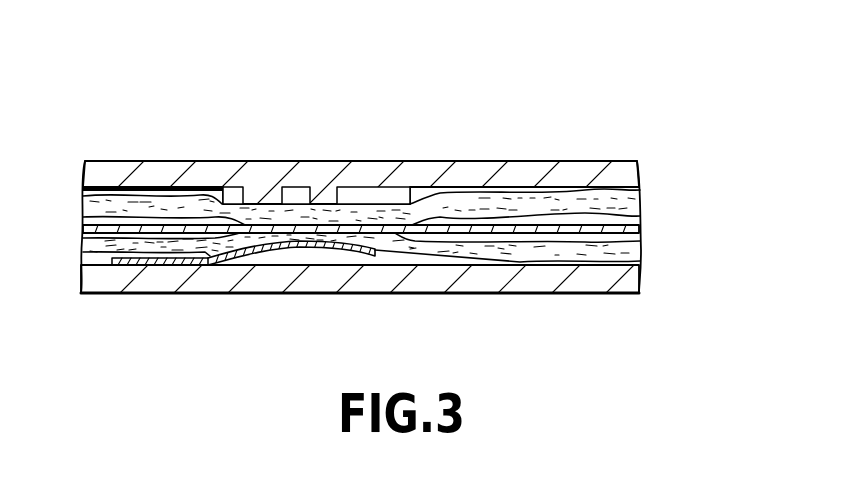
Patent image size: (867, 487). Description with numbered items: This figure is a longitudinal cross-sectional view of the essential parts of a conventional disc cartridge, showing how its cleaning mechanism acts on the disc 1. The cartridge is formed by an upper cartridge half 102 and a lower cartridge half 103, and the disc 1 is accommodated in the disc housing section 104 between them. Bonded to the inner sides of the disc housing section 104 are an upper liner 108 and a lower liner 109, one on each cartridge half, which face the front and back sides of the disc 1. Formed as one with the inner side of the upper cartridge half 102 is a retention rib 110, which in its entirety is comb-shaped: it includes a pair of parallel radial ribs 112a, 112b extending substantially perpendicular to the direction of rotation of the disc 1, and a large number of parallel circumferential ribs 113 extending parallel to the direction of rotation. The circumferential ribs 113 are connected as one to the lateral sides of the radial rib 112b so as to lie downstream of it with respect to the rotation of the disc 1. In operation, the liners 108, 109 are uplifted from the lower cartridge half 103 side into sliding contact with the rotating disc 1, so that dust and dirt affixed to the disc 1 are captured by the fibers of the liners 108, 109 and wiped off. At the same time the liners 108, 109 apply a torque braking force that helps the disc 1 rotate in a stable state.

The disc 1 is at (636, 227).
The upper cartridge half 102 is at (593, 170).
The lower cartridge half 103 is at (630, 285).
The disc housing section 104 is at (648, 240).
The upper liner 108 is at (642, 190).
The lower liner 109 is at (643, 260).
The retention rib 110 is at (258, 112).
The radial rib 112a is at (236, 200).
The radial rib 112b is at (293, 201).
The circumferential ribs 113 is at (380, 143).